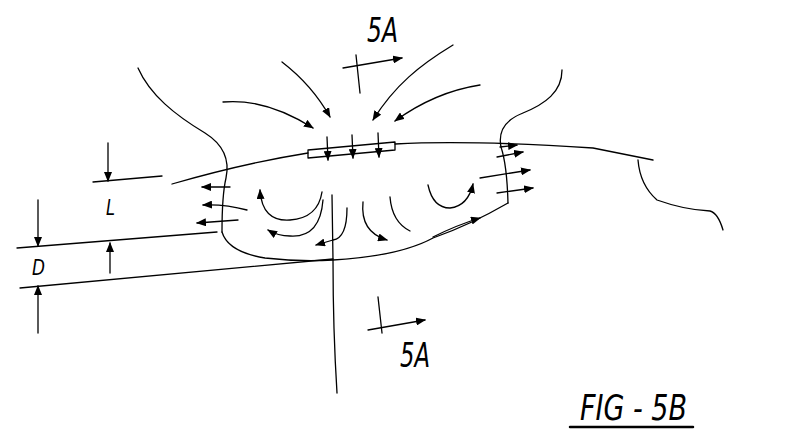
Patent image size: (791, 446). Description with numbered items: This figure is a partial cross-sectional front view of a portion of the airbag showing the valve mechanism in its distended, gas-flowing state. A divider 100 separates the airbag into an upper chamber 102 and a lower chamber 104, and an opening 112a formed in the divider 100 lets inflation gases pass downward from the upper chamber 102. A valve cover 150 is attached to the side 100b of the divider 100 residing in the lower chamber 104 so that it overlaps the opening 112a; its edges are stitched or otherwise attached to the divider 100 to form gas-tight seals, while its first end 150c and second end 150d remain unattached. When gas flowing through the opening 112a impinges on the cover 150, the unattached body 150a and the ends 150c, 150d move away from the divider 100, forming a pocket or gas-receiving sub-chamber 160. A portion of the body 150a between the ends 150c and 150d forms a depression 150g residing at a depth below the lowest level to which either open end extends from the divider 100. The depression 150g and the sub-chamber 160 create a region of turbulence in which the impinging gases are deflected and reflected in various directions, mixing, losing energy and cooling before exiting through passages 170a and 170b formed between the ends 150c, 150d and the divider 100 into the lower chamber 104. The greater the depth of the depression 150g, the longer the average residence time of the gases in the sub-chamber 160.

The divider 100 is at (593, 147).
The side of divider 100b is at (696, 211).
The outer surface 102 is at (247, 65).
The lower chamber 104 is at (302, 372).
The divider opening 112a is at (388, 137).
The valve cover 150 is at (500, 213).
The body 150a is at (277, 257).
The first end 150c is at (220, 210).
The second end 150d is at (508, 203).
The depression 150g is at (412, 238).
The gas-receiving sub-chamber 160 is at (336, 310).
The passage 170a is at (168, 135).
The passage 170b is at (540, 121).